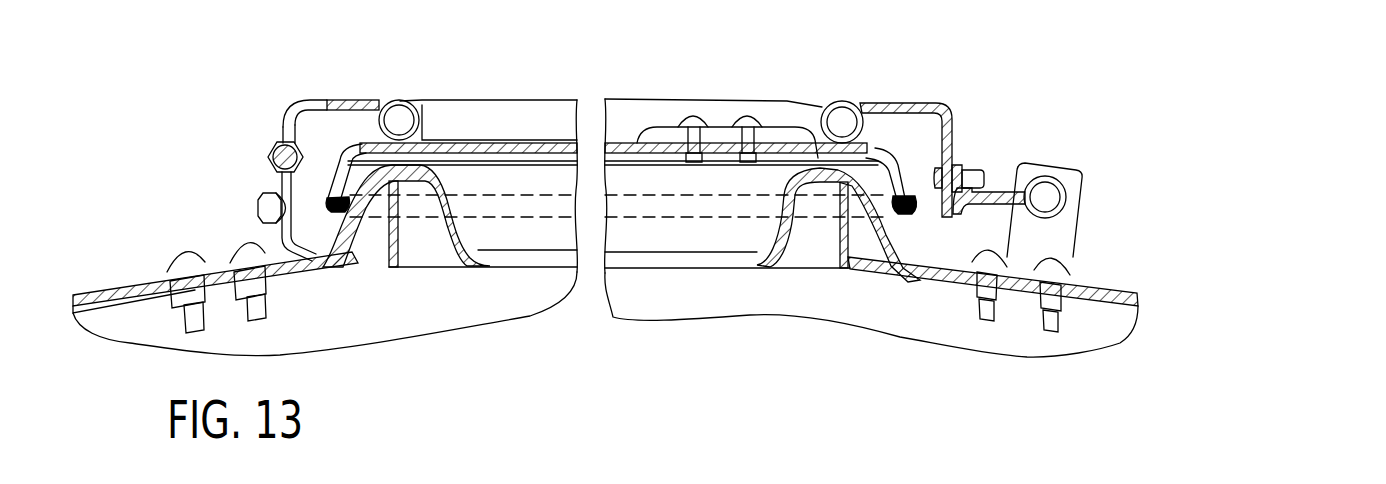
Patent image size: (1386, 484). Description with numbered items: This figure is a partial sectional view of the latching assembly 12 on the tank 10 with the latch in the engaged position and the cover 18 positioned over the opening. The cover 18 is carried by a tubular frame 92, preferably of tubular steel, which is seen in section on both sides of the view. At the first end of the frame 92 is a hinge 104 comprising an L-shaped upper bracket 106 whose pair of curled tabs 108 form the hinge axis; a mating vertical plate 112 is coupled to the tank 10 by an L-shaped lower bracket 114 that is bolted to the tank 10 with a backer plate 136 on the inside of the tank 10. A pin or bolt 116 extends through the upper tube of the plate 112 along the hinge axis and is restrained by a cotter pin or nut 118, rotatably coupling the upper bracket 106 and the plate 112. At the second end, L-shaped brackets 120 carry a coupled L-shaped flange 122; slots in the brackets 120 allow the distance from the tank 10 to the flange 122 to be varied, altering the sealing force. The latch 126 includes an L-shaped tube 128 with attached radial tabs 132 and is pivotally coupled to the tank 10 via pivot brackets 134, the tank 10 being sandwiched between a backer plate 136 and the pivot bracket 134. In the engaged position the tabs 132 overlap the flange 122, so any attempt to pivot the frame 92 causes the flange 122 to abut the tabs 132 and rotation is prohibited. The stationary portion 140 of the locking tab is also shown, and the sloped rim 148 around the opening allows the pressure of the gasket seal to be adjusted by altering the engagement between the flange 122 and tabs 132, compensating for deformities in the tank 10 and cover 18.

The tank 10 is at (1108, 292).
The latching assembly 12 is at (490, 93).
The cover 18 is at (505, 141).
The tubular frame 92 is at (397, 94).
The hinge 104 is at (313, 94).
The upper bracket 106 is at (359, 99).
The curled tabs 108 is at (290, 127).
The vertical plate 112 is at (302, 190).
The lower bracket 114 is at (220, 253).
The pin or bolt 116 is at (298, 150).
The cotter pin or nut 118 is at (270, 145).
The L-shaped brackets 120 is at (913, 103).
The flange 122 is at (980, 222).
The latch 126 is at (1048, 164).
The L-shaped tube 128 is at (1078, 190).
The radial tabs 132 is at (1002, 190).
The pivot brackets 134 is at (1078, 236).
The backer plate 136 is at (297, 280).
The stationary portion 140 is at (899, 284).
The sloped rim 148 is at (893, 147).